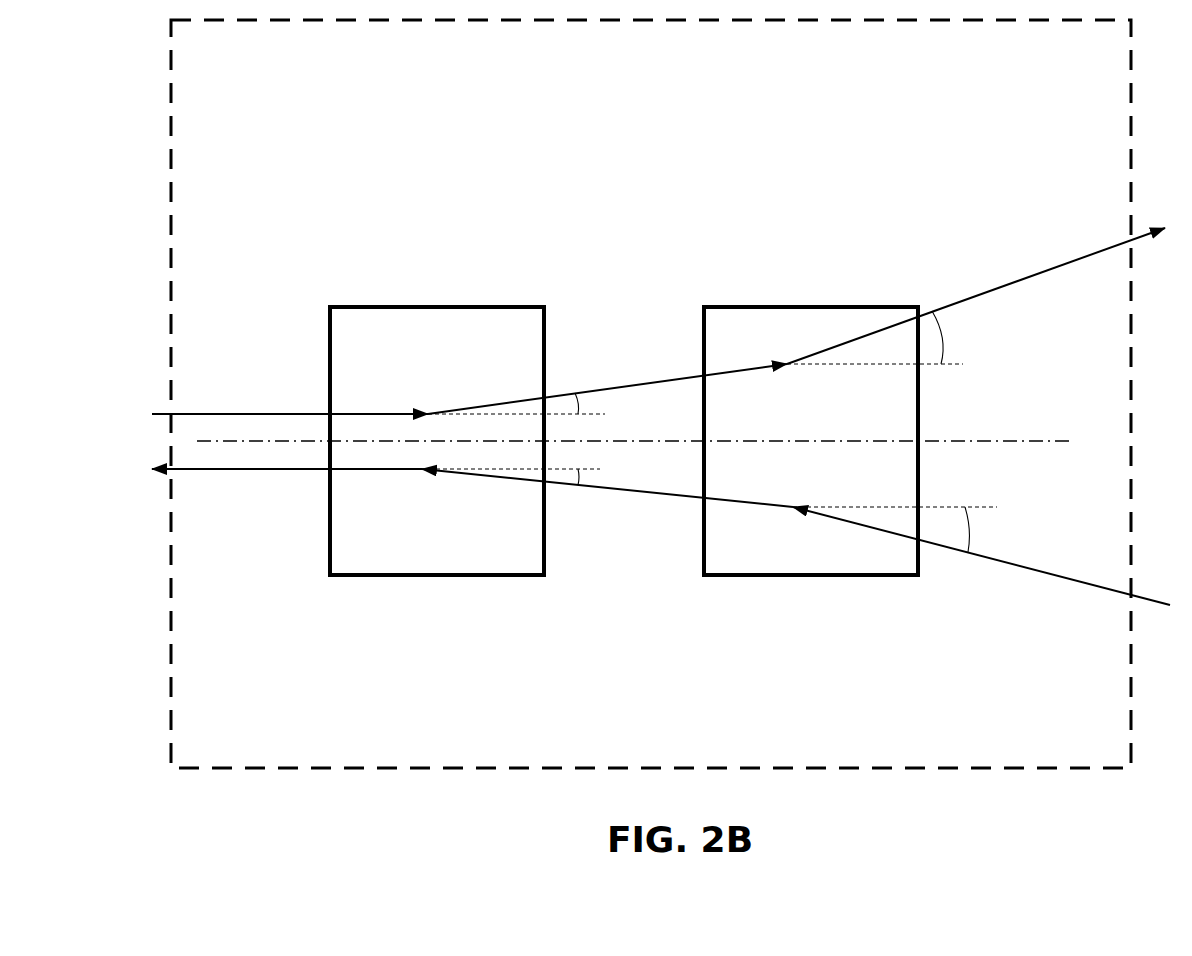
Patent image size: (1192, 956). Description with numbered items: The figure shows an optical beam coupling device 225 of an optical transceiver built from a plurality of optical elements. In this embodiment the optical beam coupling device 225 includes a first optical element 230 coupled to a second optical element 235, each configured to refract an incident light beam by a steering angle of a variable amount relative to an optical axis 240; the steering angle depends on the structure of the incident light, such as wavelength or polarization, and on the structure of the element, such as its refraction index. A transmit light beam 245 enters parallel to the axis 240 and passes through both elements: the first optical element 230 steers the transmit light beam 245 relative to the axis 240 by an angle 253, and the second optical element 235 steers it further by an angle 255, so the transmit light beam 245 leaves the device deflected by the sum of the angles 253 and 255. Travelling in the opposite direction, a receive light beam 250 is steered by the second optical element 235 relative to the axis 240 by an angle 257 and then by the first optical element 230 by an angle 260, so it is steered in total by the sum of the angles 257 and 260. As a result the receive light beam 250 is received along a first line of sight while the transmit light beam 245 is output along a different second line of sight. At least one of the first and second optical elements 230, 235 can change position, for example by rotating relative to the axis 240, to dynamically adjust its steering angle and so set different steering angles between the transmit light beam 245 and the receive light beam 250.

The optical beam coupling device 225 is at (651, 394).
The first optical element 230 is at (365, 307).
The second optical element 235 is at (732, 307).
The optical axis 240 is at (224, 441).
The transmit light beam 245 is at (983, 292).
The receive light beam 250 is at (983, 558).
The angle 253 is at (577, 413).
The angle 255 is at (945, 343).
The angle 257 is at (965, 543).
The angle 260 is at (578, 483).